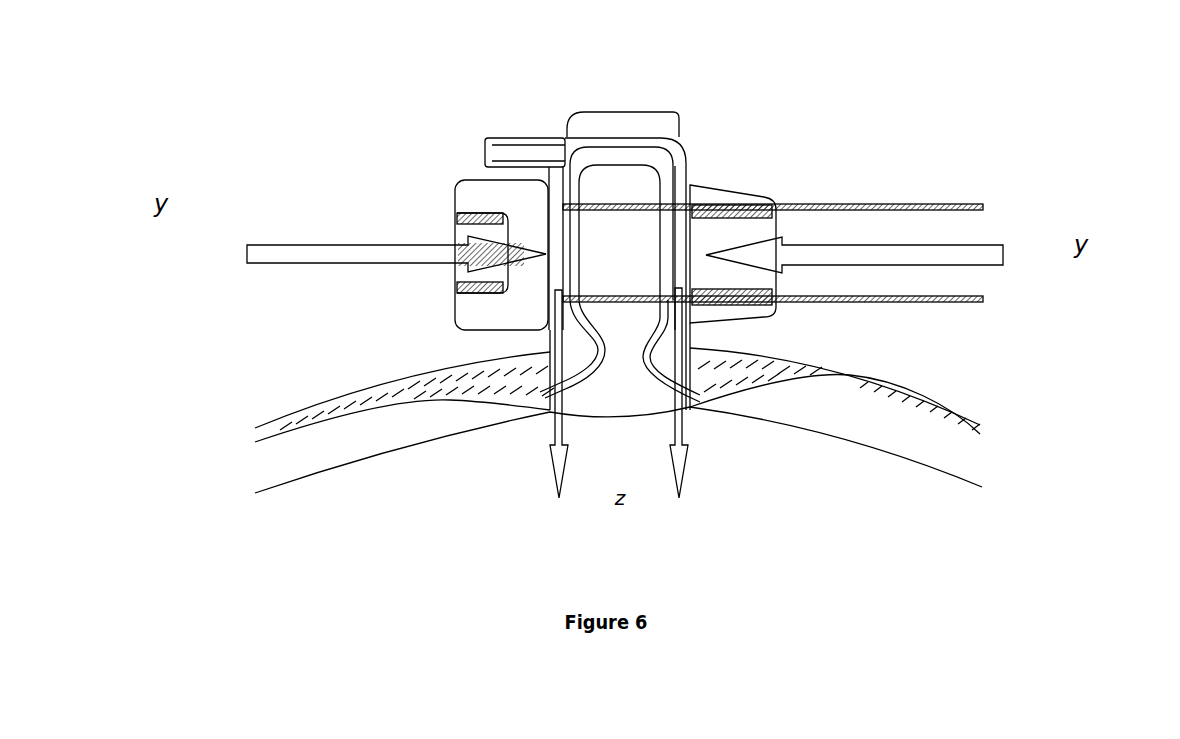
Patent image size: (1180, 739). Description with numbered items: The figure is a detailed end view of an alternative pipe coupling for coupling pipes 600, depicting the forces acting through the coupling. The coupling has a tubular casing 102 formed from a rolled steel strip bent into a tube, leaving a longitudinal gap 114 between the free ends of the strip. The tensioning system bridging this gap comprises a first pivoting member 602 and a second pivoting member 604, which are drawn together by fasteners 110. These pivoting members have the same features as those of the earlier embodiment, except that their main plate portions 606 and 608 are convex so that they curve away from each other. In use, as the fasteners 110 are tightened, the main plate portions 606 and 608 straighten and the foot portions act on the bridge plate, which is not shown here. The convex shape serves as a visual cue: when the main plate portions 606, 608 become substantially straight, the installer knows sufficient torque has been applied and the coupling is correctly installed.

The fasteners 110 is at (462, 180).
The tubular casing 102 is at (886, 390).
The longitudinal gap 114 is at (630, 425).
The pipes 600 is at (518, 447).
The first pivoting member 602 is at (592, 102).
The second pivoting member 604 is at (683, 147).
The main plate portion 606 is at (558, 183).
The main plate portion 608 is at (670, 170).